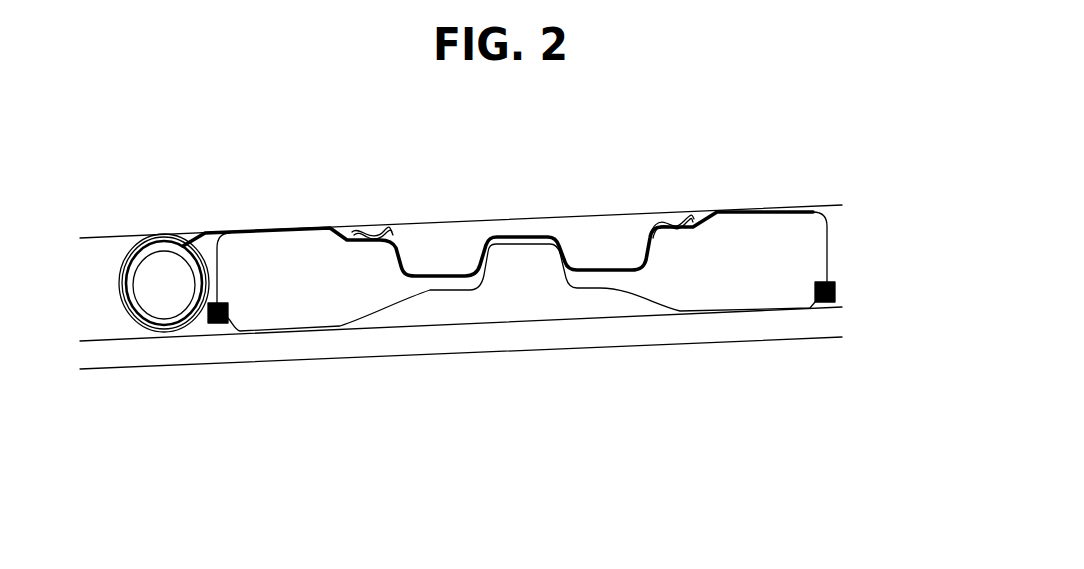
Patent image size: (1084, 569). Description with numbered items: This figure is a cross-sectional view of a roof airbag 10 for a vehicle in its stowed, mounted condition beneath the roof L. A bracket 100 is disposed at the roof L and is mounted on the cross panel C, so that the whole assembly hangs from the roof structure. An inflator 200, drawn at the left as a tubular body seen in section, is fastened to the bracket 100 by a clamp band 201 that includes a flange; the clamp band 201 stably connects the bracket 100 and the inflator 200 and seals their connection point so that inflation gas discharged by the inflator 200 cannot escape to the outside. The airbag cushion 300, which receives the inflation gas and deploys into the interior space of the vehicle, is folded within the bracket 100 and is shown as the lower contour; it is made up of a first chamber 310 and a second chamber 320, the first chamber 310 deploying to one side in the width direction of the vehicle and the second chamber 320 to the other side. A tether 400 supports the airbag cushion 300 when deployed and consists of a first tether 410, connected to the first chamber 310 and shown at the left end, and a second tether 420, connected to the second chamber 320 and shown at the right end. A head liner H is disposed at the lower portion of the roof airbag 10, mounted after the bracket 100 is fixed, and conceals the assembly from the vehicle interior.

The roof airbag 10 is at (836, 222).
The bracket 100 is at (203, 233).
The inflator 200 is at (170, 300).
The clamp band 201 is at (143, 243).
The airbag cushion 300 is at (521, 386).
The first chamber 310 is at (323, 306).
The second chamber 320 is at (608, 281).
The tether 400 is at (530, 425).
The first tether 410 is at (216, 323).
The second tether 420 is at (826, 303).
The roof L is at (500, 219).
The cross panel C is at (652, 226).
The head liner H is at (695, 327).